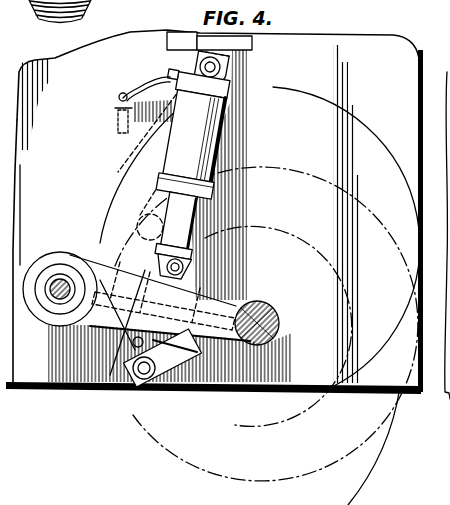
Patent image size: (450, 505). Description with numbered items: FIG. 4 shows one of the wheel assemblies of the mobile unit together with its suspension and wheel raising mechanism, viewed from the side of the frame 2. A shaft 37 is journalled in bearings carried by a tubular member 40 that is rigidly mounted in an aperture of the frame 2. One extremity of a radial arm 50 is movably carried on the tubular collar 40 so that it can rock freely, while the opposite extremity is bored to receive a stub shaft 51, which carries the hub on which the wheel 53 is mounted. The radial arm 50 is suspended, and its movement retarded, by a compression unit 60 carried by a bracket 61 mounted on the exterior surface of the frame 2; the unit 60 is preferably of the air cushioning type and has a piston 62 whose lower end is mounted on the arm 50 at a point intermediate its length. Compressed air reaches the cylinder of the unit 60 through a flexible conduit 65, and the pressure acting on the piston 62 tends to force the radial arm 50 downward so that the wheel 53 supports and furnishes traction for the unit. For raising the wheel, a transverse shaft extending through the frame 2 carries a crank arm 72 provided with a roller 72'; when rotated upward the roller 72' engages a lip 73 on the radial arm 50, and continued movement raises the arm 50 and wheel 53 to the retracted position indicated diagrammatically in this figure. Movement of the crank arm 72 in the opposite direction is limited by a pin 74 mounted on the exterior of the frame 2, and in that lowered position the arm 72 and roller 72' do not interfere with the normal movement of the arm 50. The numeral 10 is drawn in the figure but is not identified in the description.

The frame 2 is at (348, 392).
The base frame 10 is at (188, 388).
The shaft 37 is at (62, 281).
The tubular member 40 is at (54, 312).
The radial arm 50 is at (215, 304).
The stub shaft 51 is at (279, 321).
The wheel 53 is at (358, 203).
The compression unit 60 is at (228, 132).
The bracket 61 is at (195, 50).
The piston 62 is at (208, 222).
The flexible conduit 65 is at (150, 82).
The crank arm 72 is at (163, 385).
The roller 72' is at (146, 393).
The lip 73 is at (152, 276).
The pin 74 is at (108, 372).